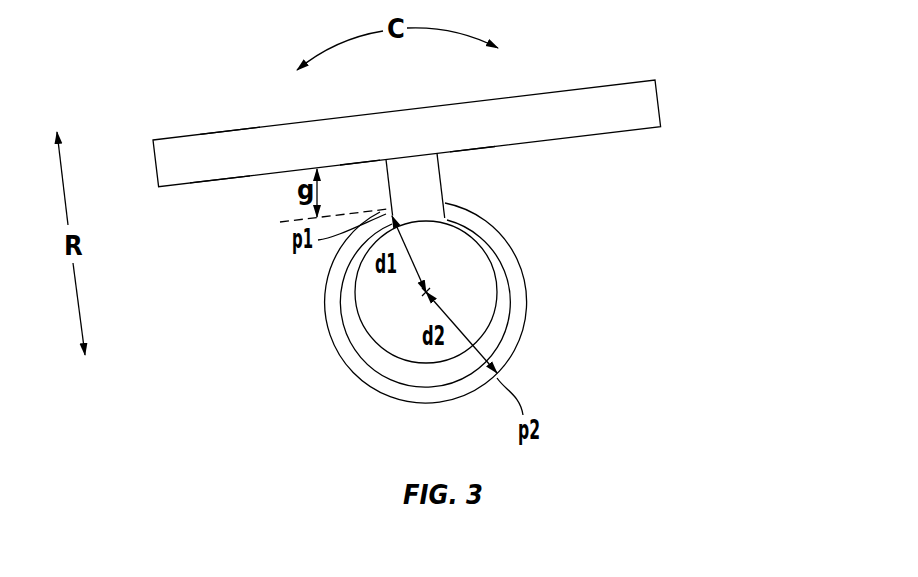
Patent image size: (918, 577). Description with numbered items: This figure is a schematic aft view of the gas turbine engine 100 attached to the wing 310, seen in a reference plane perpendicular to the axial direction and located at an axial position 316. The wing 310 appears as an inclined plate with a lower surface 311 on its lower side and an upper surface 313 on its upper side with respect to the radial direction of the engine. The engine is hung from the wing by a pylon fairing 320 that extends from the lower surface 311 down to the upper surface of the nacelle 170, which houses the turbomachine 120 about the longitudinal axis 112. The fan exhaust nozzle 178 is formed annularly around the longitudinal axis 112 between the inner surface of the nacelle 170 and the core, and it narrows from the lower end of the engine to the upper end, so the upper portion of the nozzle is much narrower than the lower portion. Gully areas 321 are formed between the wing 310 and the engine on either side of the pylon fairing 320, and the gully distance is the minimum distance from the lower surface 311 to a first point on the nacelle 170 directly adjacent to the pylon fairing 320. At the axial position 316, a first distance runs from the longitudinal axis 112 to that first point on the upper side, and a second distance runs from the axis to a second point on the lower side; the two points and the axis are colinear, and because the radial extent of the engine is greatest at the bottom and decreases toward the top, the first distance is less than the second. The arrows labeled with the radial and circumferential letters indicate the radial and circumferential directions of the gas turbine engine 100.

The gas turbine engine 100 is at (567, 247).
The longitudinal axis 112 is at (424, 294).
The turbomachine 120 is at (468, 269).
The nacelle 170 is at (512, 340).
The fan exhaust nozzle 178 is at (503, 315).
The wing 310 is at (647, 100).
The lower surface 311 is at (212, 184).
The upper surface 313 is at (226, 133).
The axial position 316 is at (434, 291).
The pylon fairing 320 is at (434, 197).
The gully areas 321 is at (381, 197).